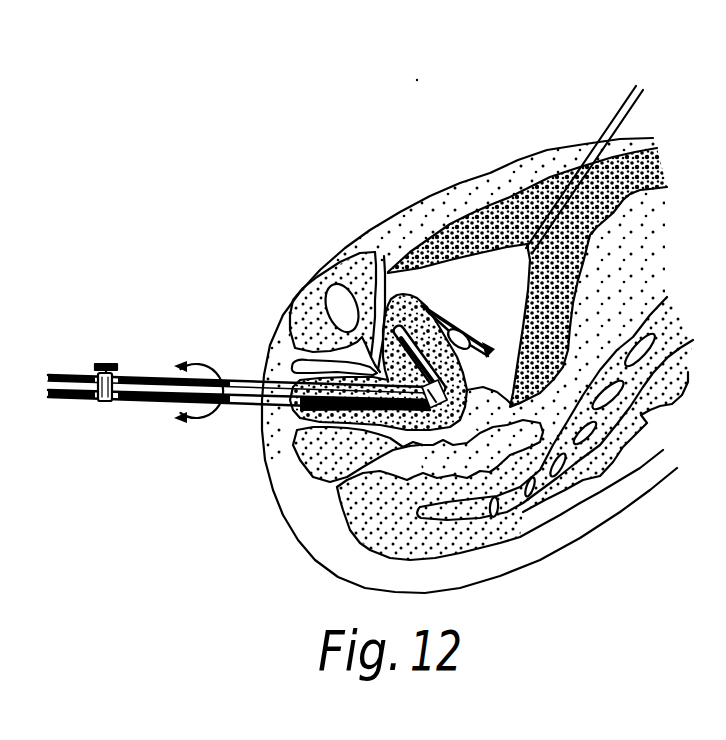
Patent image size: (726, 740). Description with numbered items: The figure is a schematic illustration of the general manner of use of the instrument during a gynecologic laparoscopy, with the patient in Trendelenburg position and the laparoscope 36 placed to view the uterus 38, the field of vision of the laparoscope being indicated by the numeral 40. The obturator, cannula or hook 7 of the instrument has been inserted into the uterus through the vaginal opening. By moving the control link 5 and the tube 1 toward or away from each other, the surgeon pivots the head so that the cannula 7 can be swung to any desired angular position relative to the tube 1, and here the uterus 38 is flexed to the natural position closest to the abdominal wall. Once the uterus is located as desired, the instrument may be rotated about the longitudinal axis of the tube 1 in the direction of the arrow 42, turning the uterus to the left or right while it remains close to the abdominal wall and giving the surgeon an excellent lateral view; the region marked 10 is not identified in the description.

The tube 1 is at (237, 405).
The control link 5 is at (143, 371).
The cannula 7 is at (420, 304).
The target tissue region 10 is at (465, 376).
The laparoscope 36 is at (612, 118).
The uterus 38 is at (386, 292).
The field of vision 40 is at (498, 268).
The arrow 42 is at (210, 364).